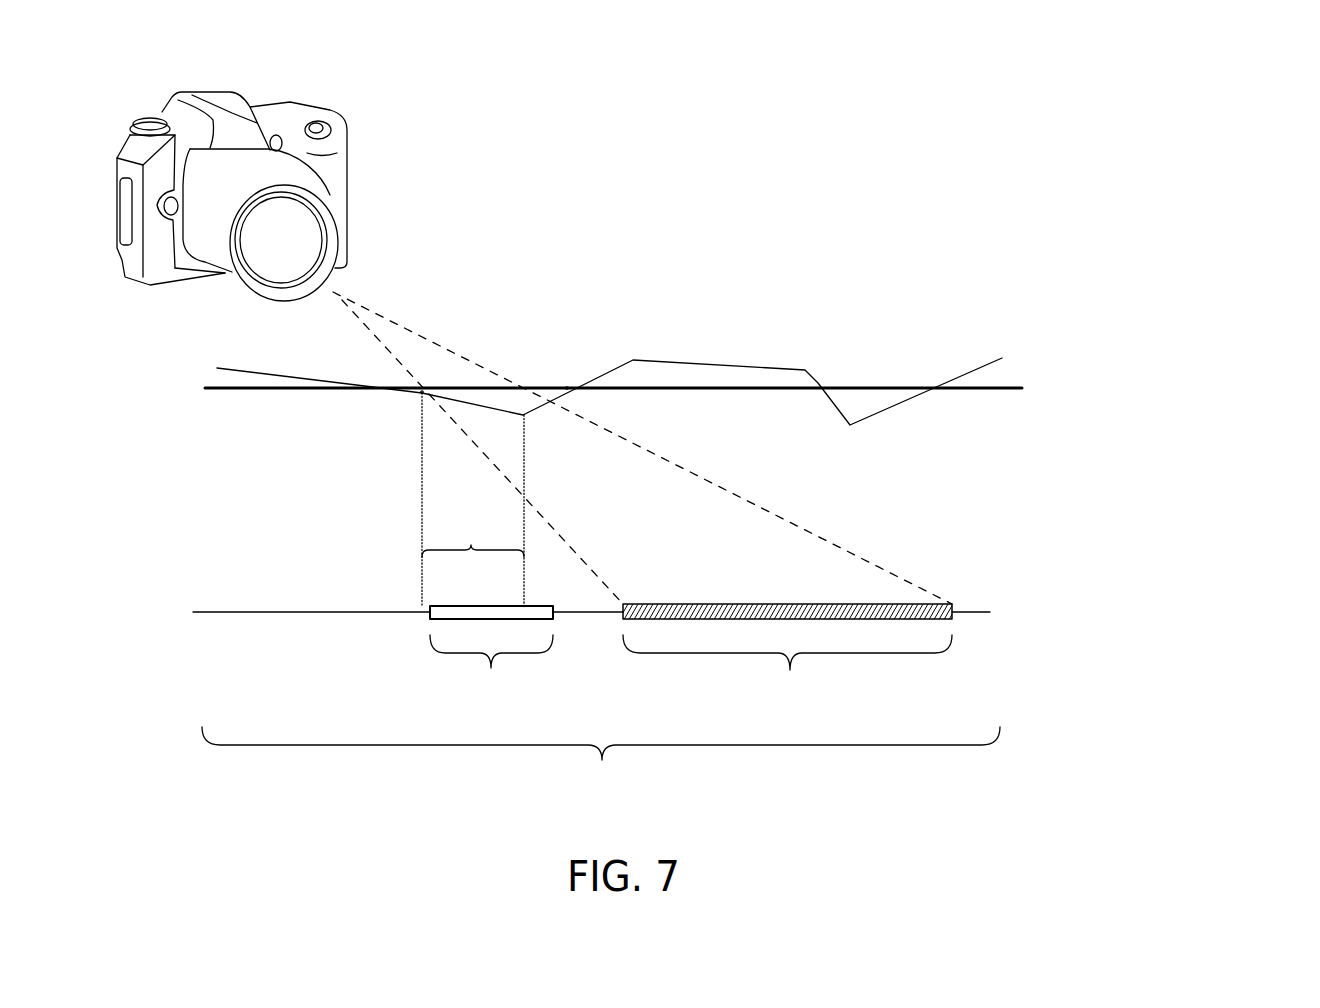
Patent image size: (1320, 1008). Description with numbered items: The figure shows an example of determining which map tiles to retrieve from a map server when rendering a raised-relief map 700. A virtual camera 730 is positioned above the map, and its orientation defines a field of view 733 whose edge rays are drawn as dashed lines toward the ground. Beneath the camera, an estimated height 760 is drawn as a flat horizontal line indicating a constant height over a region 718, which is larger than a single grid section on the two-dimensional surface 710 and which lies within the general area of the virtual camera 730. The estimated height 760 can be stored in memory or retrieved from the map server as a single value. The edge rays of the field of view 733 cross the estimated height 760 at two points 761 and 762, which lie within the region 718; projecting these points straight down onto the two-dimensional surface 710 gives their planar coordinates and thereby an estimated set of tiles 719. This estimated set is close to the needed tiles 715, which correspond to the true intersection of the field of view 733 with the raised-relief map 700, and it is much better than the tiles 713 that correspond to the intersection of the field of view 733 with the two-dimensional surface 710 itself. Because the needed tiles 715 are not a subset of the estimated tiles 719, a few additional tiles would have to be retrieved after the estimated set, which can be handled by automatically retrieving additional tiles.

The virtual camera 730 is at (273, 95).
The field of view 733 is at (430, 342).
The raised-relief map 700 is at (977, 363).
The estimated height 760 is at (1013, 387).
The point 761 is at (420, 393).
The point 762 is at (567, 388).
The estimated set of tiles 719 is at (473, 500).
The 2D surface 710 is at (631, 607).
The tiles 715 is at (491, 666).
The tiles 713 is at (787, 665).
The region 718 is at (601, 773).